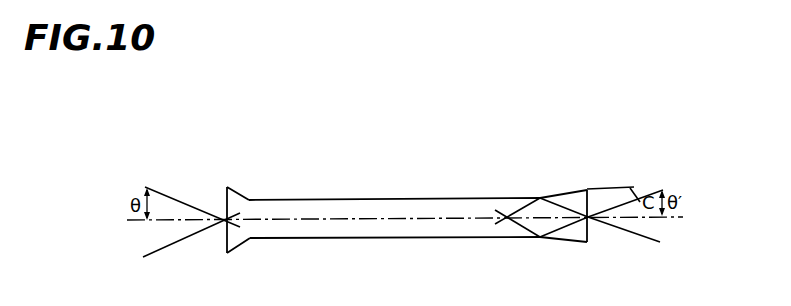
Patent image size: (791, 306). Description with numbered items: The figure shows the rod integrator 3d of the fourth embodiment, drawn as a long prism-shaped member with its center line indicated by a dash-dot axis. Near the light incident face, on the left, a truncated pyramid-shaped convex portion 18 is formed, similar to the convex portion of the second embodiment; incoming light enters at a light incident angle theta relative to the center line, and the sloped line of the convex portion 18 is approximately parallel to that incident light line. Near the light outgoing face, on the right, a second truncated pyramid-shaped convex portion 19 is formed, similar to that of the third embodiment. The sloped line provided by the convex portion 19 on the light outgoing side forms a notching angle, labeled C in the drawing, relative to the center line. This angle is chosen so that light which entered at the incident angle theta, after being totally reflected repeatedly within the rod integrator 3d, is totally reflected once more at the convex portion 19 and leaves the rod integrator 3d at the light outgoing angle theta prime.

The truncated pyramid-shaped convex portion 18 is at (247, 204).
The rod integrator 3d is at (430, 198).
The truncated pyramid-shaped convex portion 19 is at (572, 190).